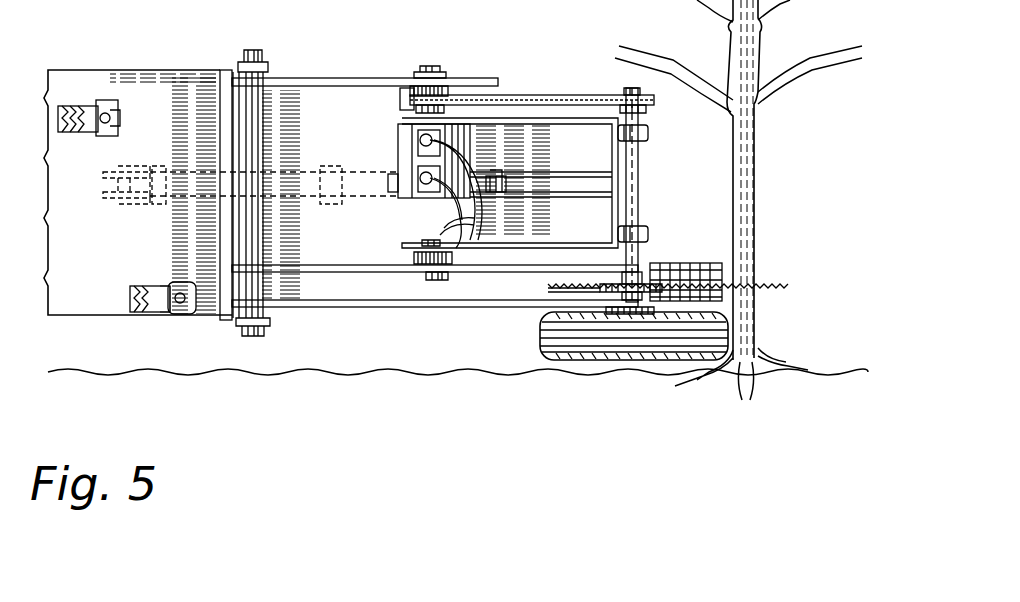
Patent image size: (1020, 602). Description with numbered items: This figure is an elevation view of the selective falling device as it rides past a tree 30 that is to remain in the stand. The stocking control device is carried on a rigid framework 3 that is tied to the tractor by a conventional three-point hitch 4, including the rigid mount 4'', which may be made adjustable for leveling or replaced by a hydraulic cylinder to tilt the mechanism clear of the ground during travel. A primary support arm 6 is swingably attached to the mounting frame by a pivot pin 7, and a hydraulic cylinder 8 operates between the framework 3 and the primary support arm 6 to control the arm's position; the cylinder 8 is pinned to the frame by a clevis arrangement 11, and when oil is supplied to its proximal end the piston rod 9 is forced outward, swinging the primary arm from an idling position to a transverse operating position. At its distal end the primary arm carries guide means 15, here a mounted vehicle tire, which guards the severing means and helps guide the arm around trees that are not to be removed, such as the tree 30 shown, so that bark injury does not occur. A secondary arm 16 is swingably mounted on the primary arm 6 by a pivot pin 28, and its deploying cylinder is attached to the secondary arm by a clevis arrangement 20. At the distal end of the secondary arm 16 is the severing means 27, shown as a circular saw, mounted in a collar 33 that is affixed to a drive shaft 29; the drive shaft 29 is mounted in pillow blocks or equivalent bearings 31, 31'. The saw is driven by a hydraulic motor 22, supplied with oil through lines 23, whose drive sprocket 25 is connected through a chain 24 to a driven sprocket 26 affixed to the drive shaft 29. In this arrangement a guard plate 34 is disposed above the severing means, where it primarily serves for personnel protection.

The rigid framework 3 is at (142, 76).
The three-point hitch 4 is at (163, 319).
The rigid mount 4'' is at (89, 138).
The primary support arm 6 is at (362, 294).
The pivot pin 7 is at (262, 322).
The hydraulic cylinder 8 is at (184, 172).
The piston rod 9 is at (345, 166).
The clevis arrangement 11 is at (118, 166).
The guide means 15 is at (540, 336).
The secondary arm 16 is at (552, 120).
The clevis arrangement 20 is at (500, 178).
The hydraulic motor 22 is at (410, 196).
The lines 23 is at (448, 214).
The chain 24 is at (530, 96).
The drive sprocket 25 is at (404, 94).
The driven sprocket 26 is at (646, 114).
The severing means 27 is at (548, 286).
The pivot pin 28 is at (430, 70).
The drive shaft 29 is at (640, 184).
The tree trunk 30 is at (744, 328).
The bearing 31 is at (659, 141).
The bearing 31' is at (661, 222).
The collar 33 is at (644, 280).
The guard plate 34 is at (690, 264).